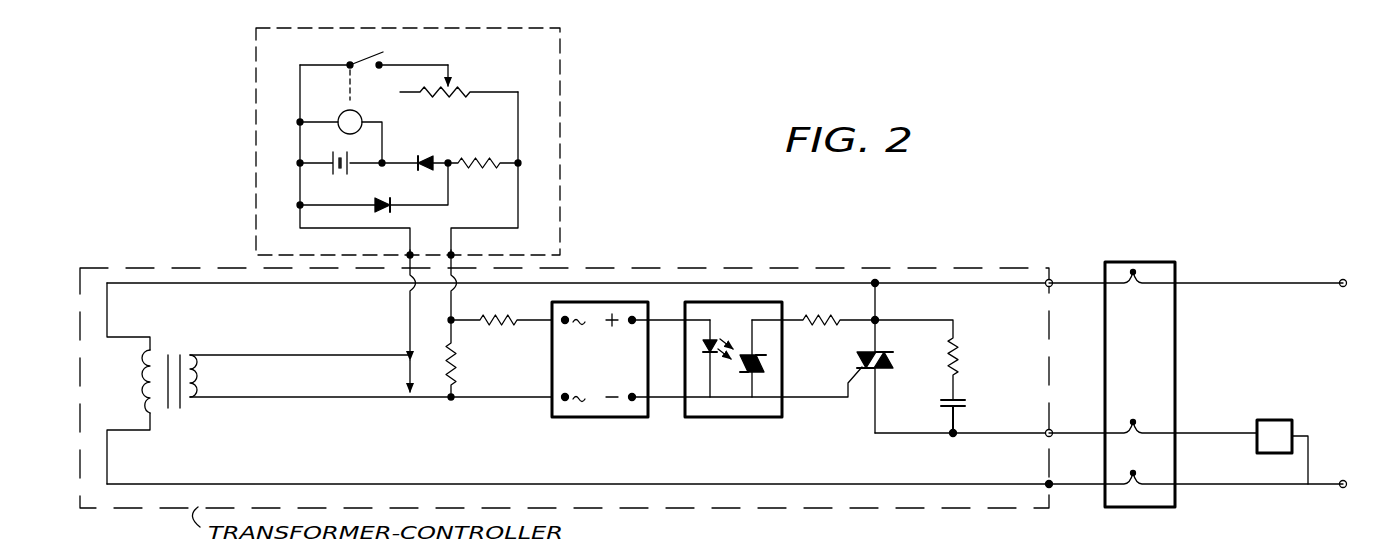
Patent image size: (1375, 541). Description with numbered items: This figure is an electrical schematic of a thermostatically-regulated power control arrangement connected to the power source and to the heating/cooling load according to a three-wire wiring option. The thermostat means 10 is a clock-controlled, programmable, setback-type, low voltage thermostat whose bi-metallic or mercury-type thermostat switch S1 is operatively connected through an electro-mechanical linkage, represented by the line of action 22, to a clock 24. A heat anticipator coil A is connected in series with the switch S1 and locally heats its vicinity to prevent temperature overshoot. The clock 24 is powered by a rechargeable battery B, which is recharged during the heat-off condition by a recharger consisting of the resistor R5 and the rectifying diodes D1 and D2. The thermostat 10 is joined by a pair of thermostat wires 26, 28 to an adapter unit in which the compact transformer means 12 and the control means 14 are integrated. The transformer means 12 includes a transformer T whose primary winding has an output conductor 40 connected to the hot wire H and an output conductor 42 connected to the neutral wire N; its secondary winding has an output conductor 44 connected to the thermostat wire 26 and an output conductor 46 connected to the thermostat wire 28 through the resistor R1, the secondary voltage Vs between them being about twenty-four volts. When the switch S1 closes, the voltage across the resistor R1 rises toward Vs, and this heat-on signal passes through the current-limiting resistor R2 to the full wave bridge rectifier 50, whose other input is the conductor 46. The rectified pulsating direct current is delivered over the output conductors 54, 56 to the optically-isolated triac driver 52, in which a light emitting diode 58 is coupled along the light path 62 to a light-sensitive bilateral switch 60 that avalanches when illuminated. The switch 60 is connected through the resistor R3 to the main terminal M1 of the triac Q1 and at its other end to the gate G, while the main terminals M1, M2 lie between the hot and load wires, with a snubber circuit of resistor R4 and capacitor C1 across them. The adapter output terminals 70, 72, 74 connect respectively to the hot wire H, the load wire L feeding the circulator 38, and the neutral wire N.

The thermostat means 10 is at (553, 48).
The transformer means 12 is at (210, 430).
The control means 14 is at (571, 441).
The line of action 22 is at (350, 88).
The clock 24 is at (342, 129).
The thermostat wire 26 is at (408, 252).
The thermostat wire 28 is at (455, 253).
The circulator 38 is at (1280, 420).
The output conductor 40 is at (188, 283).
The output conductor 42 is at (308, 484).
The output conductor 44 is at (297, 356).
The output conductor 46 is at (286, 398).
The full wave bridge rectifier 50 is at (600, 410).
The optically-isolated triac driver 52 is at (730, 412).
The output conductor 54 is at (664, 319).
The output conductor 56 is at (664, 401).
The light emitting diode 58 is at (702, 346).
The light-sensitive silicon bilateral switch 60 is at (766, 364).
The light path 62 is at (729, 357).
The output terminal 70 is at (1052, 281).
The output terminal 72 is at (1047, 437).
The output terminal 74 is at (1051, 488).
The thermostat switch S1 is at (373, 52).
The heat anticipator coil A is at (459, 75).
The rechargeable battery B is at (333, 176).
The rectifying diode D1 is at (388, 210).
The rectifying diode D2 is at (424, 155).
The resistor R5 is at (483, 183).
The transformer T is at (169, 397).
The secondary voltage Vs is at (410, 377).
The resistor R1 is at (460, 364).
The current-limiting resistor R2 is at (517, 327).
The resistor R3 is at (813, 306).
The resistor R4 is at (966, 375).
The capacitor C1 is at (966, 405).
The triac Q1 is at (891, 358).
The gate G is at (840, 375).
The main terminal M1 is at (881, 352).
The main terminal M2 is at (876, 371).
The hot line H is at (1207, 283).
The load line L is at (1153, 423).
The neutral line N is at (1207, 480).